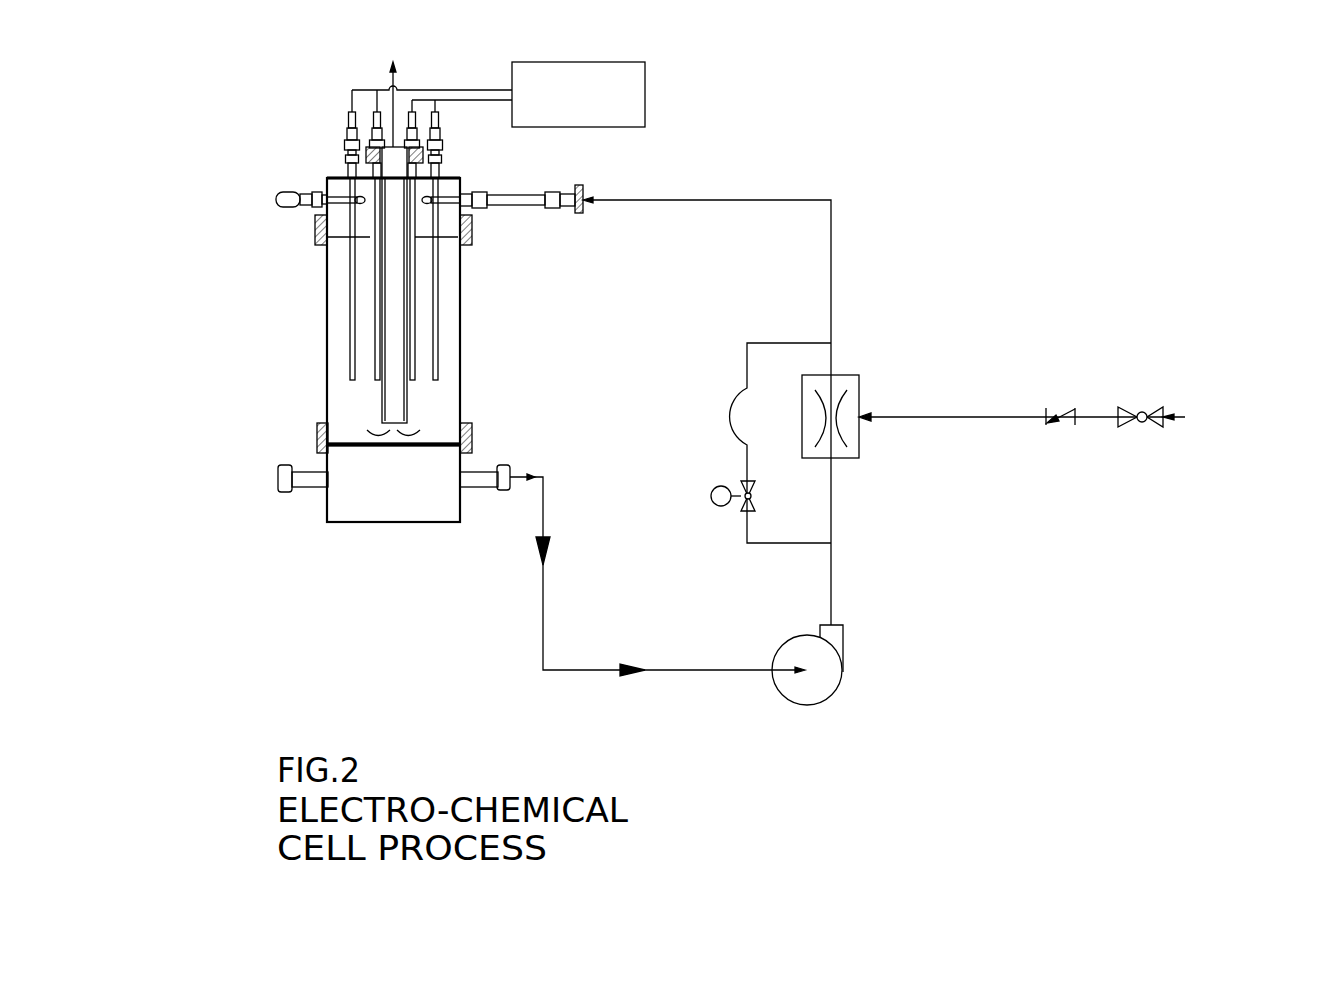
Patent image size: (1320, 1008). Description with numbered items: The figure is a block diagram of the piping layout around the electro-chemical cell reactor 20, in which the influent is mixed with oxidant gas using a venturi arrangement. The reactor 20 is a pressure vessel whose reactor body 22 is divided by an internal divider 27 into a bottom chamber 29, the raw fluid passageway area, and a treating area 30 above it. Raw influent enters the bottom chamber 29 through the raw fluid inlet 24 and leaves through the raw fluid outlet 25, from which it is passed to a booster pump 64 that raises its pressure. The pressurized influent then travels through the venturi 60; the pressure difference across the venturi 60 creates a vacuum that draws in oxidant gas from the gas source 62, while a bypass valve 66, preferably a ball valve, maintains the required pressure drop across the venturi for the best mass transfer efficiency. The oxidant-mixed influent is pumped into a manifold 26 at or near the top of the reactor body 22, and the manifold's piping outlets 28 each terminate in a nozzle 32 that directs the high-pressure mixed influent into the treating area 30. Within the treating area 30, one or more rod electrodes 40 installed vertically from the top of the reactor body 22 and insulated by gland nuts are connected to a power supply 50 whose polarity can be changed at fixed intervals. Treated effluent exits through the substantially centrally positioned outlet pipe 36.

The electro-chemical cell reactor 20 is at (322, 315).
The reactor body 22 is at (462, 335).
The raw fluid inlet 24 is at (277, 482).
The raw fluid outlet 25 is at (508, 490).
The manifold 26 is at (510, 198).
The internal divider 27 is at (432, 447).
The piping outlets 28 is at (310, 207).
The bottom chamber 29 is at (358, 490).
The treating area 30 is at (437, 400).
The nozzle 32 is at (360, 198).
The outlet pipe 36 is at (393, 401).
The rod electrodes 40 is at (437, 297).
The power supply 50 is at (498, 94).
The venturi 60 is at (842, 418).
The oxidant gas source 62 is at (1076, 415).
The booster pump 64 is at (889, 671).
The bypass valve 66 is at (717, 443).